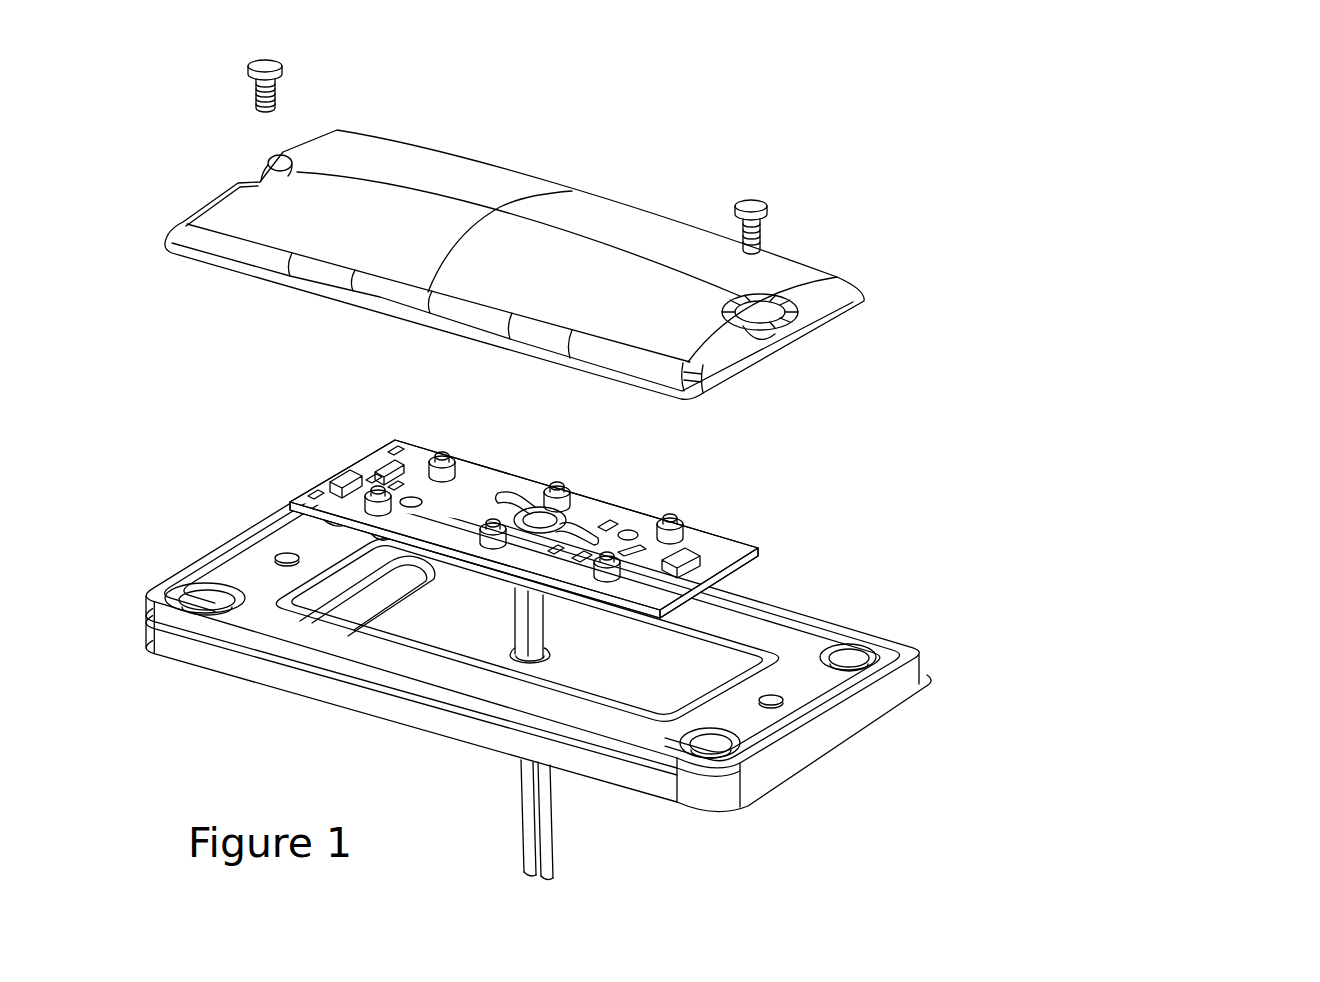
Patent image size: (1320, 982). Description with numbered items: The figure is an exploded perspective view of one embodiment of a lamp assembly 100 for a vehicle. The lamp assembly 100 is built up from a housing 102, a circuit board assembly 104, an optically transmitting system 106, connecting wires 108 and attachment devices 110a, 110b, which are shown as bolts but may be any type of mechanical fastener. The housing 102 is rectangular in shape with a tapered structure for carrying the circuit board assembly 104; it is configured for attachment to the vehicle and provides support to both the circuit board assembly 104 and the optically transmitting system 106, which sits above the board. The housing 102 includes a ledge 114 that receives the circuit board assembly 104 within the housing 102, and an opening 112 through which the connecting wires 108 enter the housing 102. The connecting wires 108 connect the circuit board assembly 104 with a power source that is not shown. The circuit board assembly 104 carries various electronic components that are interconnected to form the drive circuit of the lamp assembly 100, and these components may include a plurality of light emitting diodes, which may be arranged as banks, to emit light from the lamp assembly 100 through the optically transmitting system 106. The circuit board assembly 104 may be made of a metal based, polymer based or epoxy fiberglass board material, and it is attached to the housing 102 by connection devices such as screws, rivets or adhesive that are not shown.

The lamp assembly 100 is at (1160, 801).
The housing 102 is at (616, 644).
The circuit board assembly 104 is at (727, 547).
The optically transmitting system 106 is at (780, 272).
The connecting wires 108 is at (553, 820).
The attachment device 110a is at (272, 58).
The attachment device 110b is at (752, 196).
The opening 112 is at (550, 655).
The ledge 114 is at (360, 603).